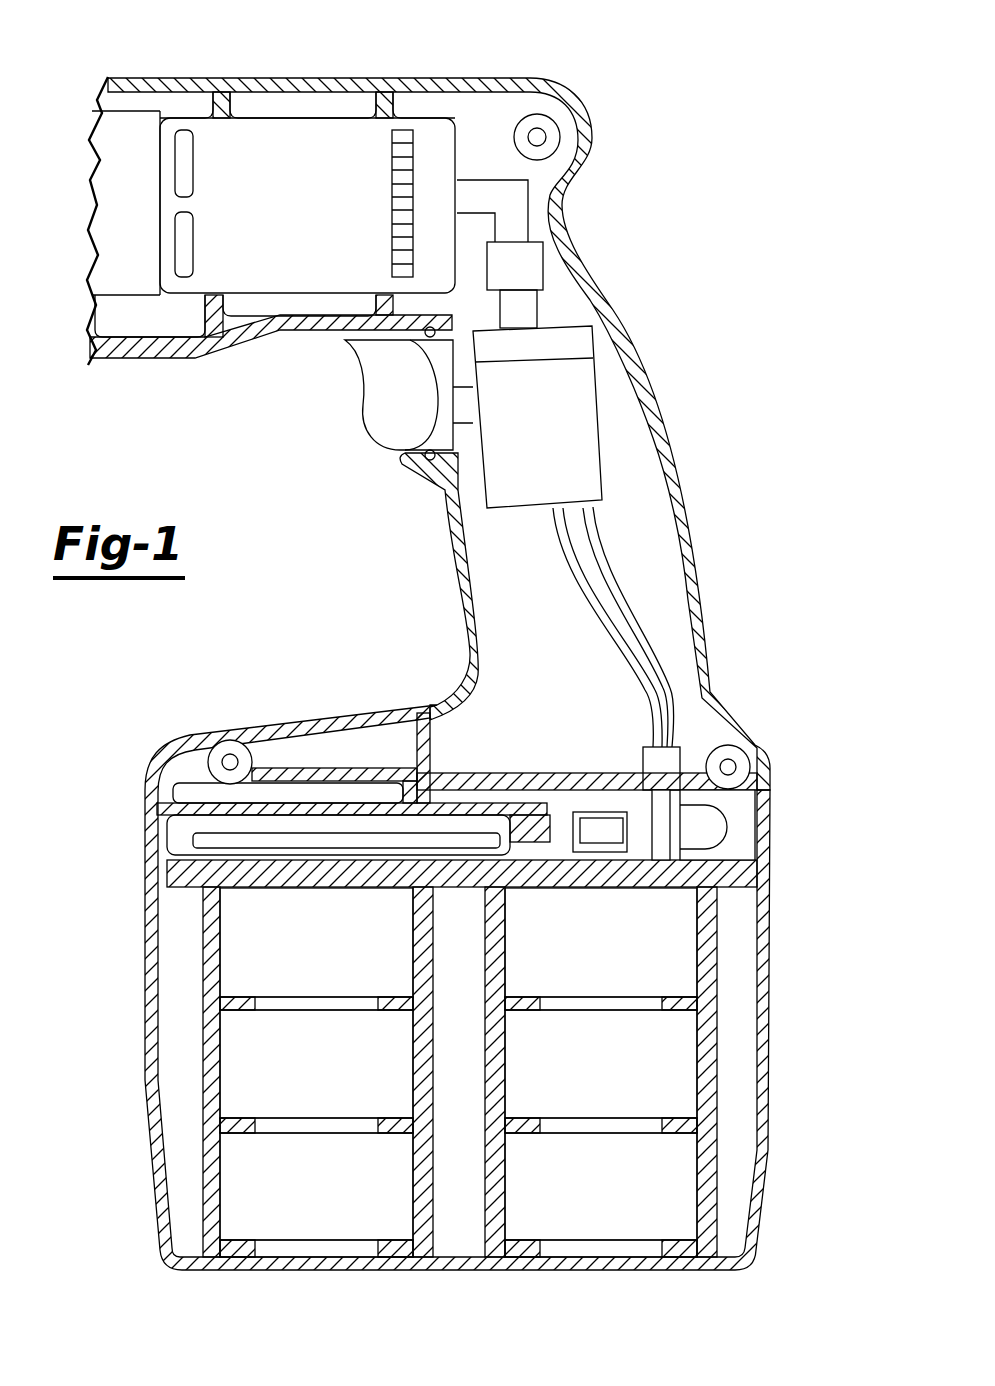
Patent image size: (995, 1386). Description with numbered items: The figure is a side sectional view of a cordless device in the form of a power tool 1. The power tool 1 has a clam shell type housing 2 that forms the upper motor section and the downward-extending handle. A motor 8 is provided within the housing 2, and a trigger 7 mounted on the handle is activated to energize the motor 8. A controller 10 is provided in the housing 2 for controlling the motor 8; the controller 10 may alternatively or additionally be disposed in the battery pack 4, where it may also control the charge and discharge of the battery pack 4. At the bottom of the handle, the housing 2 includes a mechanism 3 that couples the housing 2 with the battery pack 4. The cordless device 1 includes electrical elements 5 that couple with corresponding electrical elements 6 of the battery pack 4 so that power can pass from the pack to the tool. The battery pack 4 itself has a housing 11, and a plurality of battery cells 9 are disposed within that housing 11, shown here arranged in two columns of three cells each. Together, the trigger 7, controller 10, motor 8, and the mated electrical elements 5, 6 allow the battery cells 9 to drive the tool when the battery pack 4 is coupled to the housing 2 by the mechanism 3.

The power tool 1 is at (428, 399).
The housing 2 is at (663, 400).
The mechanism 3 is at (737, 827).
The battery pack 4 is at (476, 987).
The electrical elements 5 is at (638, 838).
The electrical elements 6 is at (563, 830).
The trigger 7 is at (380, 400).
The motor 8 is at (333, 142).
The battery cells 9 is at (232, 950).
The controller 10 is at (545, 266).
The housing 11 is at (770, 1128).